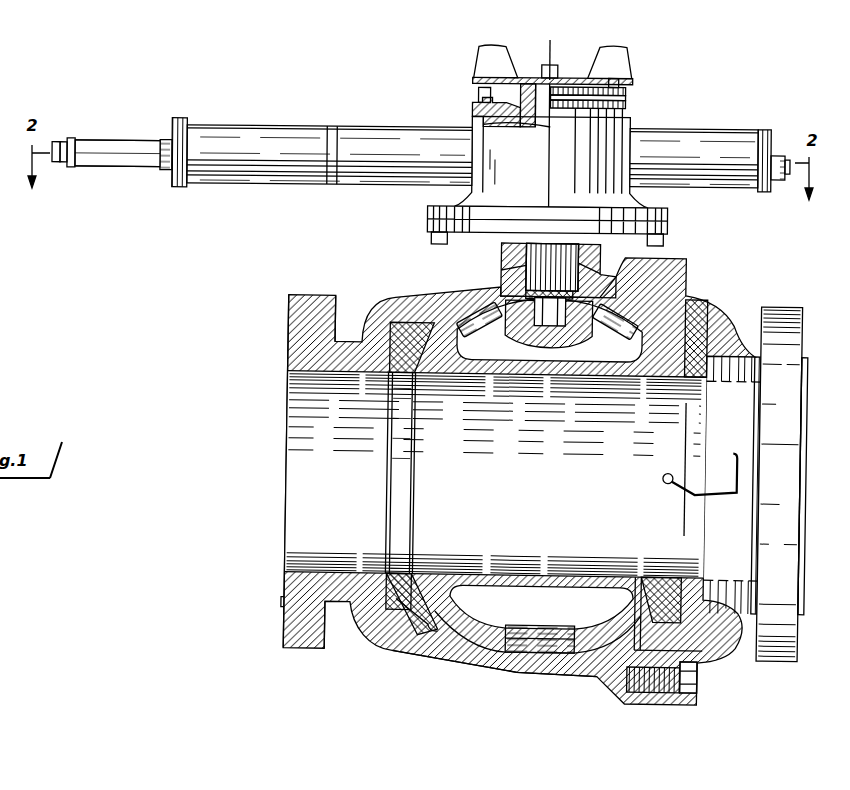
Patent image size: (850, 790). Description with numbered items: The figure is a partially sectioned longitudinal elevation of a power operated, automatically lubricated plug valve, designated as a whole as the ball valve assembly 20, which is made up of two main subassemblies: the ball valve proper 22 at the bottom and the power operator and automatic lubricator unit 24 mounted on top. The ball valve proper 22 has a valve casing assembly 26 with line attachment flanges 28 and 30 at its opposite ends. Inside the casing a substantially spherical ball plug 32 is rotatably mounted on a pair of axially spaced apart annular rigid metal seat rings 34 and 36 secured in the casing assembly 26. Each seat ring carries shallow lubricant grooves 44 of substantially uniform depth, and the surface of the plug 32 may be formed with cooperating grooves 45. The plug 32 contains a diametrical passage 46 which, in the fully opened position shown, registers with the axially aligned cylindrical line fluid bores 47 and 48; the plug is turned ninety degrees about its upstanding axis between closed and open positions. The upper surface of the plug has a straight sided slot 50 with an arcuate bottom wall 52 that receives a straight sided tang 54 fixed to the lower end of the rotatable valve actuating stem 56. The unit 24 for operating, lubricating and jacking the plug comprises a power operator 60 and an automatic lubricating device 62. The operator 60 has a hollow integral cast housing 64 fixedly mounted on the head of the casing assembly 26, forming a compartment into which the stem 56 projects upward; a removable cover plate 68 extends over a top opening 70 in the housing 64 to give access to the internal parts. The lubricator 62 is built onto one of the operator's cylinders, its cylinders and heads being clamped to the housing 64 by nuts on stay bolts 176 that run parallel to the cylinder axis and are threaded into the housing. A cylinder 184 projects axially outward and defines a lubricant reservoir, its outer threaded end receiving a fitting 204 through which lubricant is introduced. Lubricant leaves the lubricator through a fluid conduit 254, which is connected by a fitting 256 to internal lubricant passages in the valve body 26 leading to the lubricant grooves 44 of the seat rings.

The ball valve assembly 20 is at (360, 628).
The ball valve proper 22 is at (278, 609).
The power operator and automatic lubricator unit 24 is at (680, 192).
The valve casing assembly 26 is at (462, 654).
The line attachment flange 28 is at (303, 648).
The line attachment flange 30 is at (783, 653).
The ball plug 32 is at (489, 631).
The seat ring 34 is at (405, 624).
The seat ring 36 is at (663, 621).
The lubricant grooves 44 is at (422, 374).
The cooperating grooves 45 is at (421, 588).
The diametrical passage 46 is at (532, 573).
The line fluid bore 47 is at (284, 566).
The line fluid bore 48 is at (780, 575).
The straight sided slot 50 is at (570, 314).
The arcuate bottom wall 52 is at (528, 336).
The straight sided tang 54 is at (543, 302).
The valve actuating stem 56 is at (530, 260).
The power operator 60 is at (668, 124).
The automatic lubricating device 62 is at (299, 190).
The housing 64 is at (477, 190).
The cover plate 68 is at (529, 78).
The top opening 70 is at (487, 102).
The stay bolts 176 is at (253, 165).
The cylinder 184 is at (125, 144).
The fitting 204 is at (64, 170).
The fluid conduit 254 is at (716, 492).
The fitting 256 is at (665, 470).